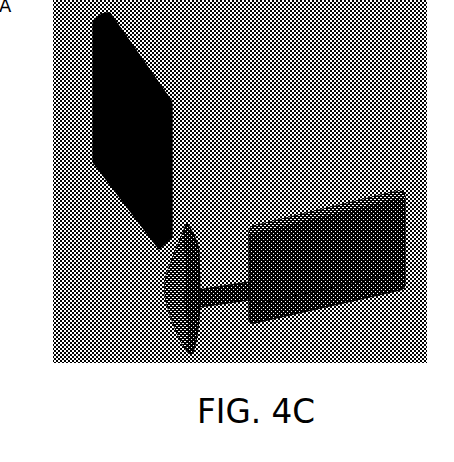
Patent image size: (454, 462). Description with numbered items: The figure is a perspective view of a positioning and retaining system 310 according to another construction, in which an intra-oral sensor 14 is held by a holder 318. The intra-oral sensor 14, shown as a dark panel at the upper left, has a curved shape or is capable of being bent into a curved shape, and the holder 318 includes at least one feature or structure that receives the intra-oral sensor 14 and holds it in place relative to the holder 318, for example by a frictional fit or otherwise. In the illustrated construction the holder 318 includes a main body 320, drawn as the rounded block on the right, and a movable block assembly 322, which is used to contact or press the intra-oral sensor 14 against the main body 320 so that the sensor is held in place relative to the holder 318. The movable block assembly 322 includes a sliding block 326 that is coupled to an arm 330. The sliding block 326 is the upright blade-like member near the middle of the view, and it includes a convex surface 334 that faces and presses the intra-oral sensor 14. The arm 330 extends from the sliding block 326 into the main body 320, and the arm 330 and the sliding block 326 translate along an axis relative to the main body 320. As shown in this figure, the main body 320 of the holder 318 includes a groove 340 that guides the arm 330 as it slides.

The intra-oral sensor 14 is at (147, 62).
The positioning and retaining system 310 is at (232, 80).
The holder 318 is at (347, 198).
The main body 320 is at (317, 218).
The movable block assembly 322 is at (128, 292).
The sliding block 326 is at (183, 270).
The arm 330 is at (230, 293).
The convex surface 334 is at (197, 248).
The groove 340 is at (338, 268).